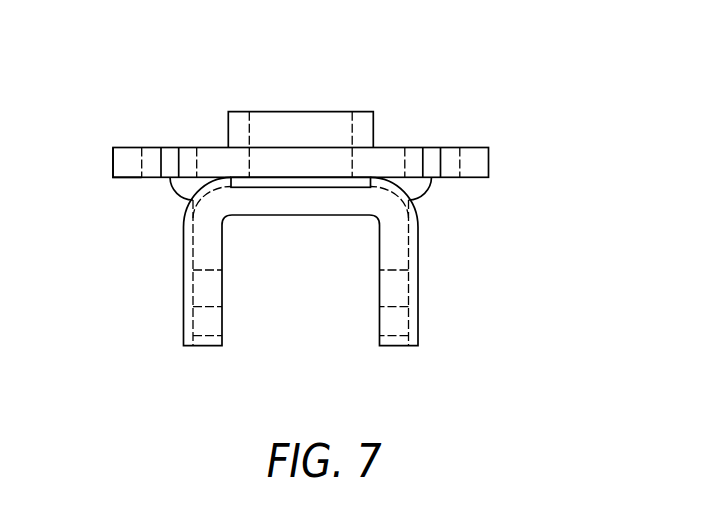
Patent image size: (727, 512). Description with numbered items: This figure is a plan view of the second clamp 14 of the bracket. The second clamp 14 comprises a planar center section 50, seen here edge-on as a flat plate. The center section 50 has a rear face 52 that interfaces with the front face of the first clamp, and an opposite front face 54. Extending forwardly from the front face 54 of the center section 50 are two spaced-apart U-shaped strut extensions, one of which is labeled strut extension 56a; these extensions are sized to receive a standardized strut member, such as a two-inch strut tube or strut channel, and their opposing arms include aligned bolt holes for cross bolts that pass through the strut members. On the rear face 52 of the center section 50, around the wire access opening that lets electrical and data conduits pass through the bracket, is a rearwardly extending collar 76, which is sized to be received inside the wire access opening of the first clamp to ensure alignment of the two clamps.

The second clamp 14 is at (364, 261).
The planar center section 50 is at (286, 149).
The rear face 52 is at (212, 147).
The front face 54 is at (128, 178).
The U-shaped strut extension 56a is at (393, 248).
The rearwardly extending collar 76 is at (375, 120).